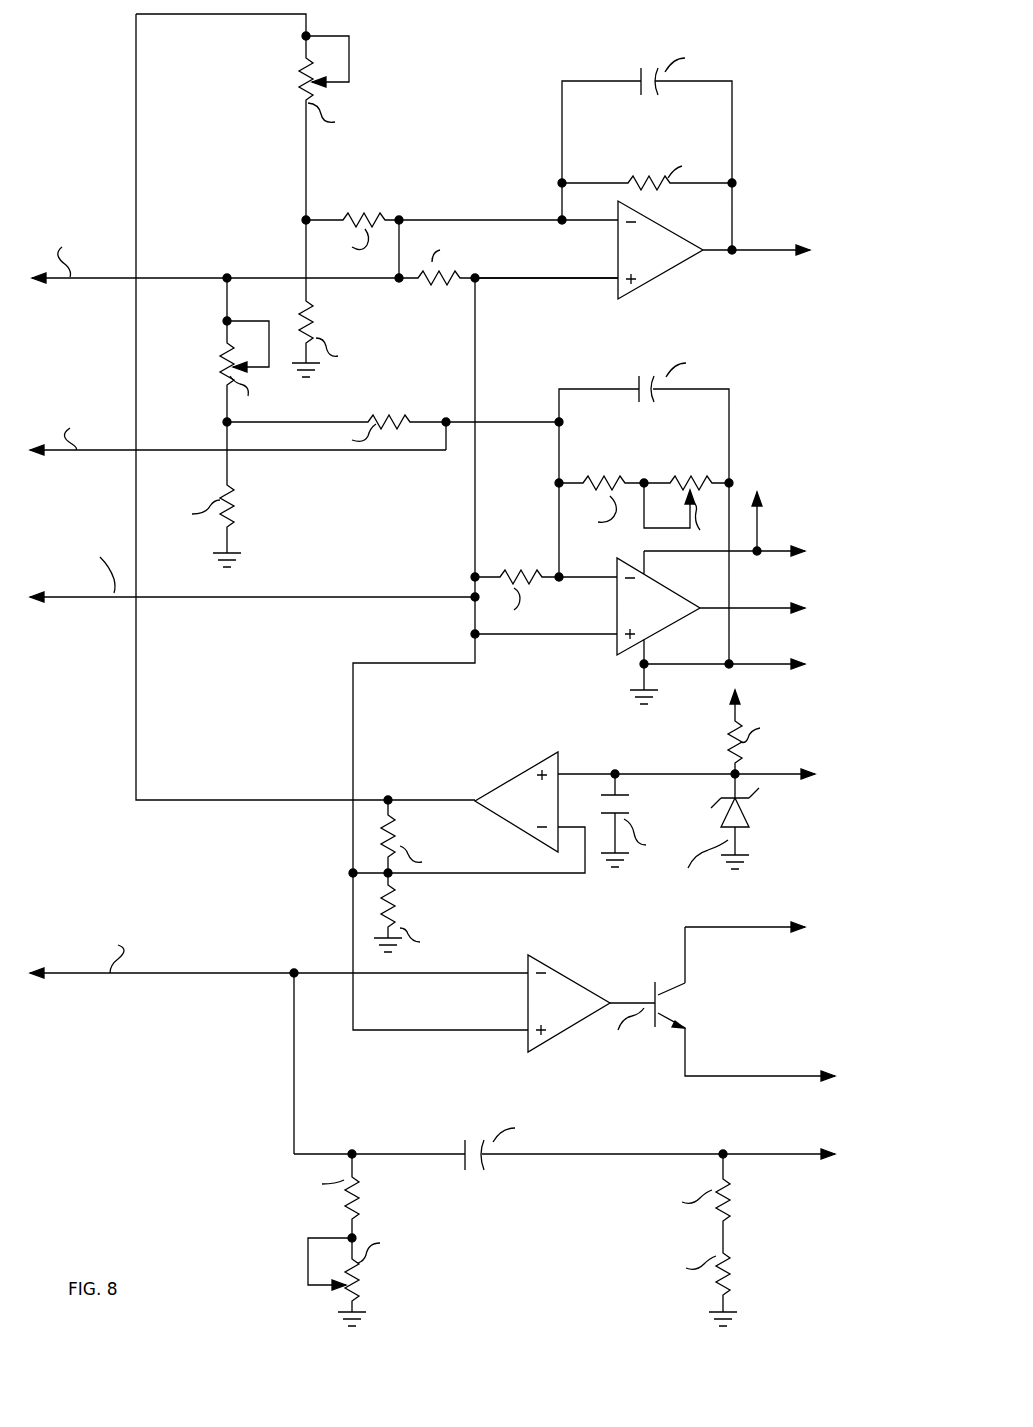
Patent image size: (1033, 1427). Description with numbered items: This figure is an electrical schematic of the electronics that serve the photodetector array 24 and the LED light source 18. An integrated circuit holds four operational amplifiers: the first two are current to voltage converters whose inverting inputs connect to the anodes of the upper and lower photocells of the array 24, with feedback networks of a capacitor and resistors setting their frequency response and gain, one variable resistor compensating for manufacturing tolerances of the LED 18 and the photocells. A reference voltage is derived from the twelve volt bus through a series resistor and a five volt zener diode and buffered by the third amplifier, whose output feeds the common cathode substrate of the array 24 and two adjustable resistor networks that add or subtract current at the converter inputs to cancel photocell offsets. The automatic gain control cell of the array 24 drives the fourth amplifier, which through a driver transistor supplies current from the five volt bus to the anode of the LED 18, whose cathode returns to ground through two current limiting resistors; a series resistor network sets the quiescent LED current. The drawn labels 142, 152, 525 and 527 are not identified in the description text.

The LED drive circuit 142 is at (214, 1085).
The transistor driver stage 152 is at (801, 952).
The operational amplifier U1A 525 is at (618, 244).
The operational amplifier U1B 527 is at (617, 604).
The photodetector array 24 is at (254, 604).
The LED light source 18 is at (588, 1113).